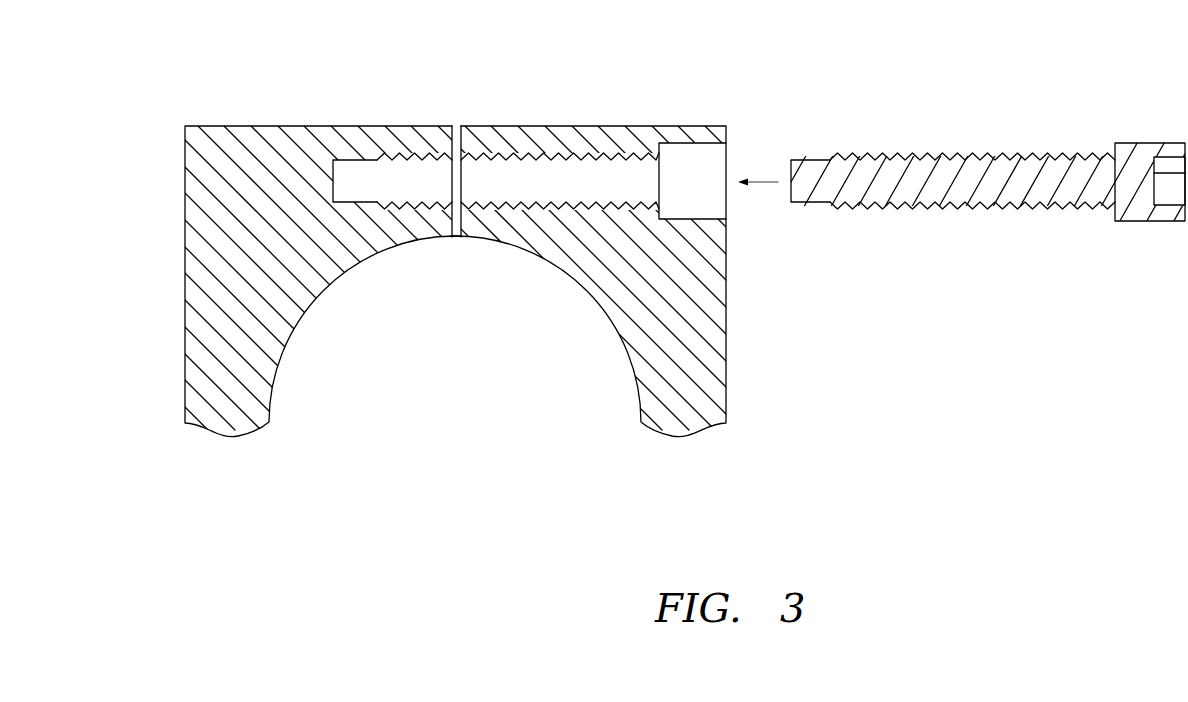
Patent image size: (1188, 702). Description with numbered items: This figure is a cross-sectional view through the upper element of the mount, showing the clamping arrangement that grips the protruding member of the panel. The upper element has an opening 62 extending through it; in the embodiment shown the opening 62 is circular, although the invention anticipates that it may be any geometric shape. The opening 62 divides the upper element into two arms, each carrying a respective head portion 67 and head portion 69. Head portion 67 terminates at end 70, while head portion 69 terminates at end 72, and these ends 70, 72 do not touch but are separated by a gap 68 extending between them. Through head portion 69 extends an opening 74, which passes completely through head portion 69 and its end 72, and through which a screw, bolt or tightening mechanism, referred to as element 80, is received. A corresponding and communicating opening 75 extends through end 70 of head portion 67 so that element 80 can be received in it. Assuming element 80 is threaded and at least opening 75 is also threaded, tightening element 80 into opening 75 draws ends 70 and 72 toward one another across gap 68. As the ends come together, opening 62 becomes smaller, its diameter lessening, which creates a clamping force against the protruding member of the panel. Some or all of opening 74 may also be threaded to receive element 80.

The opening 62 is at (464, 375).
The head portion 67 is at (225, 125).
The gap 68 is at (456, 242).
The head portion 69 is at (583, 125).
The end 70 is at (453, 124).
The end 72 is at (461, 145).
The opening 74 is at (724, 167).
The opening 75 is at (367, 183).
The screw/bolt/tightening mechanism 80 is at (1138, 143).